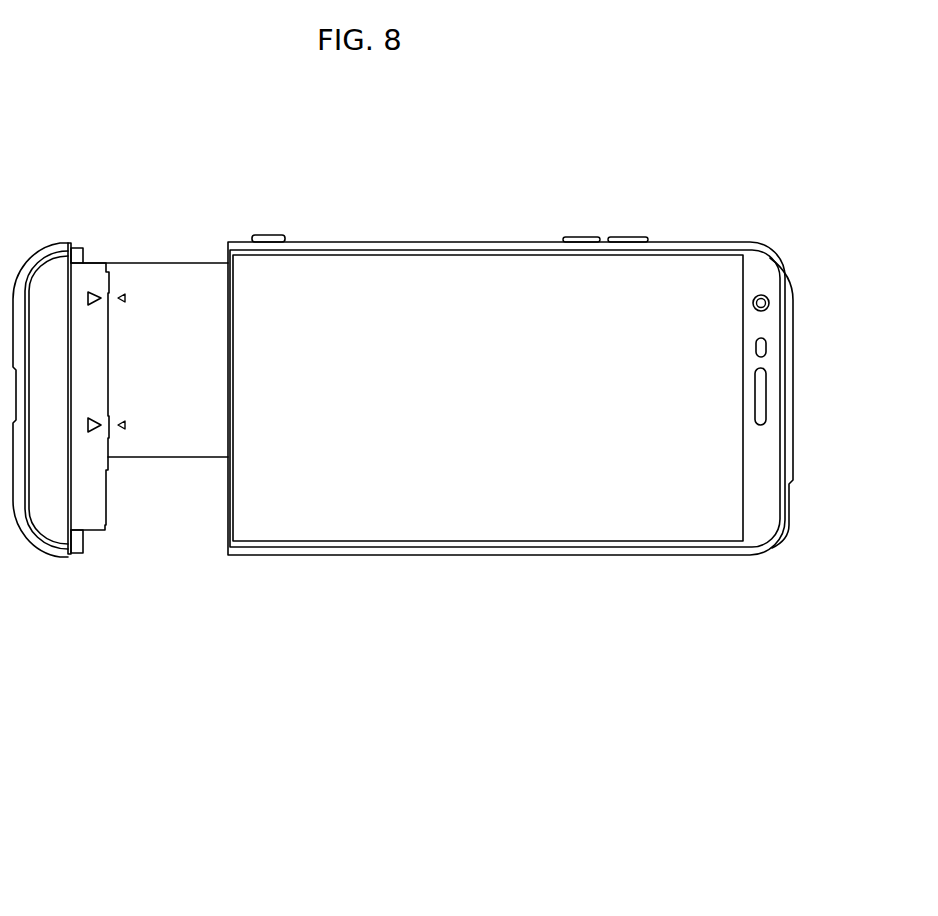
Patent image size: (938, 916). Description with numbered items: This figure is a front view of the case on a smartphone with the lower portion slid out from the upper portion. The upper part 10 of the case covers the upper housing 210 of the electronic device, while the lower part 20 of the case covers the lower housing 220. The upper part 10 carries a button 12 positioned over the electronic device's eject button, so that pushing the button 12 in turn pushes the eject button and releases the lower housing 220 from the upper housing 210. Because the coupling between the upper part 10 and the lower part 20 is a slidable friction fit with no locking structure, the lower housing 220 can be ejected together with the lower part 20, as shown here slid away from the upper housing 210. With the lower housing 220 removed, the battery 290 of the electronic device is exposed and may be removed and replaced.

The upper part 10 is at (388, 548).
The button 12 is at (267, 237).
The lower part 20 is at (42, 550).
The upper housing 210 is at (492, 460).
The lower housing 220 is at (48, 480).
The battery 290 is at (143, 430).